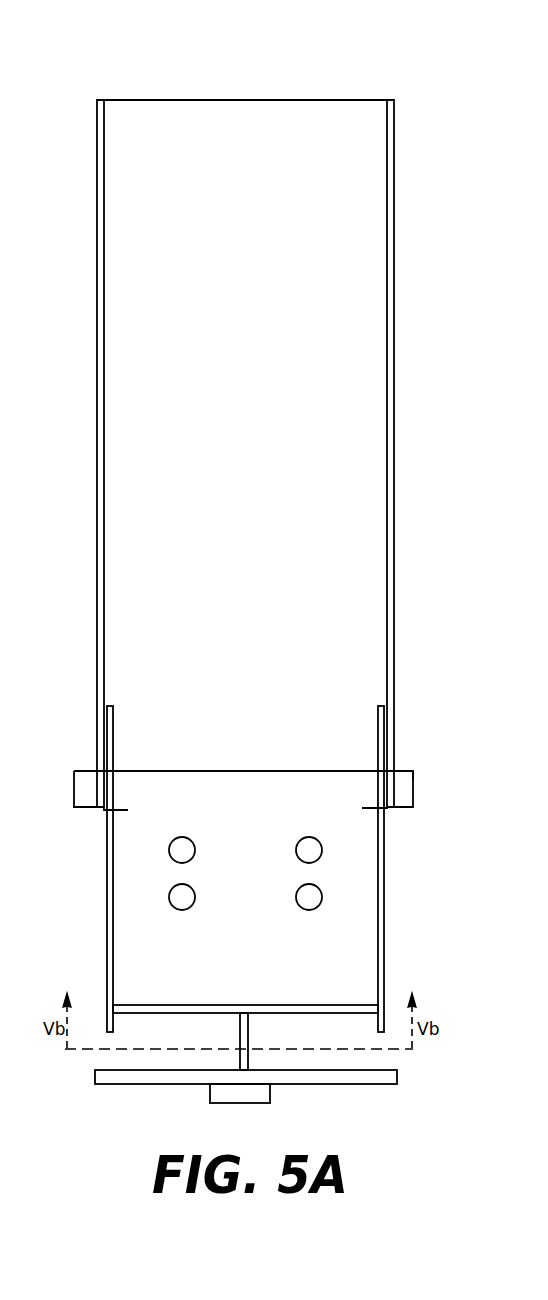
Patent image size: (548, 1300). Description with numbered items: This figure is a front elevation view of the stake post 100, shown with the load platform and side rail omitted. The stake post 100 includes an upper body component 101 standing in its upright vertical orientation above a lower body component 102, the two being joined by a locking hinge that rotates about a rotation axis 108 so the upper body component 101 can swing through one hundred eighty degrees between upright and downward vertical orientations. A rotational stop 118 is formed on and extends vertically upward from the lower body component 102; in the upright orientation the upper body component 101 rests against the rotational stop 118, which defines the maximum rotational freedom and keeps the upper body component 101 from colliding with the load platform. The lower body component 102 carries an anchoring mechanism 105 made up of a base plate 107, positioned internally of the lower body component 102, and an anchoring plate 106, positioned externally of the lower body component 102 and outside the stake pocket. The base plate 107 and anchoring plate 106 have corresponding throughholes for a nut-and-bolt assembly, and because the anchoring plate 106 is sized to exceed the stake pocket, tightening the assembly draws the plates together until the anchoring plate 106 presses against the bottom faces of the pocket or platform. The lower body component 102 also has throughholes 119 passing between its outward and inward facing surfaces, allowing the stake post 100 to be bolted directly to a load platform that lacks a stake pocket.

The stake post 100 is at (385, 54).
The upper body component 101 is at (352, 322).
The lower body component 102 is at (328, 940).
The anchoring mechanism 105 is at (82, 1109).
The anchoring plate 106 is at (338, 1080).
The base plate 107 is at (143, 1008).
The rotation axis 108 is at (407, 798).
The rotational stop 118 is at (401, 770).
The throughholes 119 is at (176, 908).